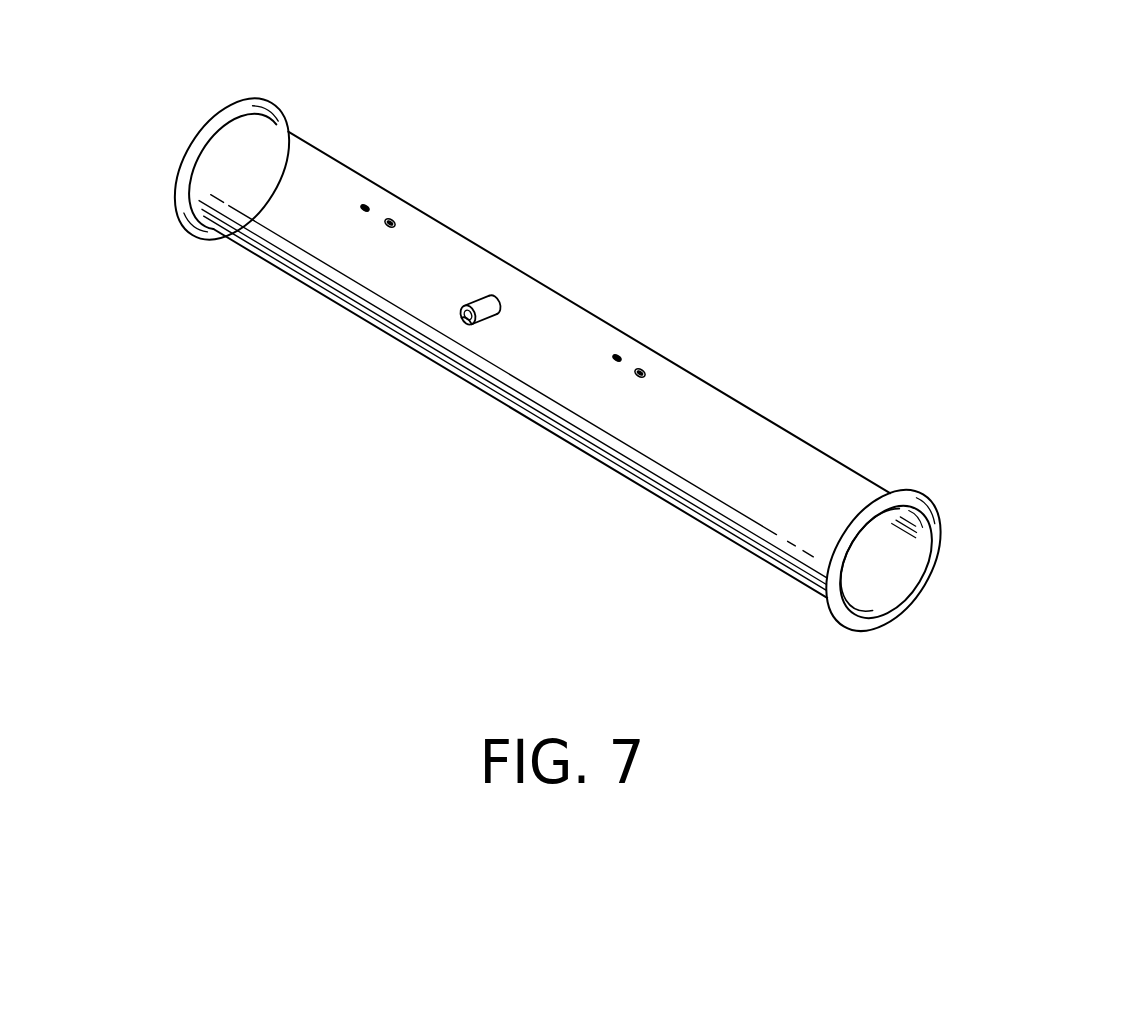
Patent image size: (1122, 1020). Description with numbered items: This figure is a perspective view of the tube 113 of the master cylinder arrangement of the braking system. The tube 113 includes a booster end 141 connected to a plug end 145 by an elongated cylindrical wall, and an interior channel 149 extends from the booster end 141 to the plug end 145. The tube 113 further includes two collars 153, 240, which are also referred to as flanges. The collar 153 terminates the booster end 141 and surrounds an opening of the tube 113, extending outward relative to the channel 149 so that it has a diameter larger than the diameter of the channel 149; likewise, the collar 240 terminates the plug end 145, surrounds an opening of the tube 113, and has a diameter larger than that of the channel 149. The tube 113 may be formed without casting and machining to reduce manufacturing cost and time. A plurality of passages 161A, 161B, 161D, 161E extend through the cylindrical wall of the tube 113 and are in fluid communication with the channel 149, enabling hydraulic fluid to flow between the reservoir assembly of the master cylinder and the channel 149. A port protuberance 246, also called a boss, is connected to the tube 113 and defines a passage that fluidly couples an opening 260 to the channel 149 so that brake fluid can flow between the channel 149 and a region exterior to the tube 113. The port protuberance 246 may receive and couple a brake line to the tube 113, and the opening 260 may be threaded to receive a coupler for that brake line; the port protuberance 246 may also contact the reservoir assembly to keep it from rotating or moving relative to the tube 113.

The tube 113 is at (582, 346).
The booster end 141 is at (778, 572).
The plug end 145 is at (236, 246).
The interior channel 149 is at (888, 562).
The collar 153 is at (902, 488).
The passage 161A is at (367, 204).
The passage 161B is at (392, 219).
The passage 161D is at (619, 352).
The passage 161E is at (644, 368).
The collar 240 is at (222, 109).
The port protuberance 246 is at (465, 307).
The opening 260 is at (474, 328).